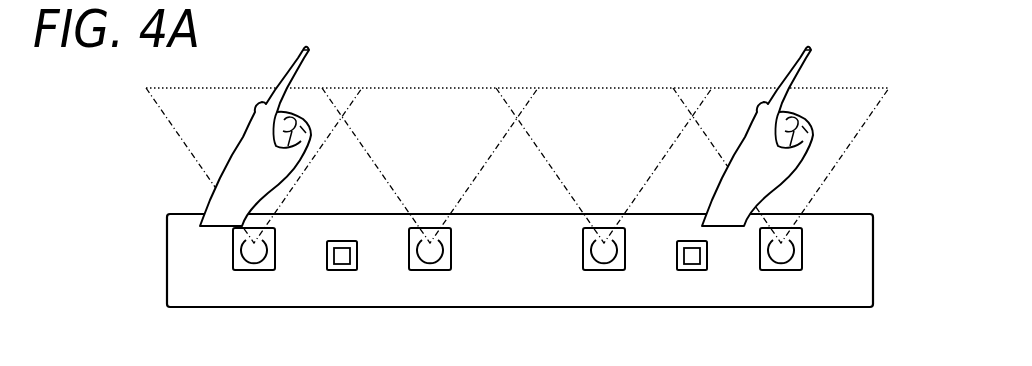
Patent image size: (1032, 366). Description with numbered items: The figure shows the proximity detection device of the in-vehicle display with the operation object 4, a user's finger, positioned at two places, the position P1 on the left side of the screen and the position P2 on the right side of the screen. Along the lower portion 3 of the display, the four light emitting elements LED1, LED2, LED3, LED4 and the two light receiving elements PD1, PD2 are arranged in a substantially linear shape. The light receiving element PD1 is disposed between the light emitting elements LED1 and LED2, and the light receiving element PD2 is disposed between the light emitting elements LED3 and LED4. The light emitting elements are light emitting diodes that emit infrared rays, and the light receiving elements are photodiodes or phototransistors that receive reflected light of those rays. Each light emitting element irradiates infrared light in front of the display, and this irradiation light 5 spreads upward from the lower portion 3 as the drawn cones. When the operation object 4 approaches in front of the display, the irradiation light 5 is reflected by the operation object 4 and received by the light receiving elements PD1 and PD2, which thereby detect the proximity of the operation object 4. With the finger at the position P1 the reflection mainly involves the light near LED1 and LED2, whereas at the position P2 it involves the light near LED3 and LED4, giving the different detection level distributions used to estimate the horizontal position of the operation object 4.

The lower portion 3 is at (873, 250).
The operation object 4 is at (279, 80).
The irradiation light 5 is at (620, 87).
The position P1 is at (305, 33).
The position P2 is at (809, 33).
The light emitting element LED1 is at (253, 267).
The light emitting element LED2 is at (429, 267).
The light emitting element LED3 is at (603, 267).
The light emitting element LED4 is at (781, 267).
The light receiving element PD1 is at (340, 273).
The light receiving element PD2 is at (692, 273).